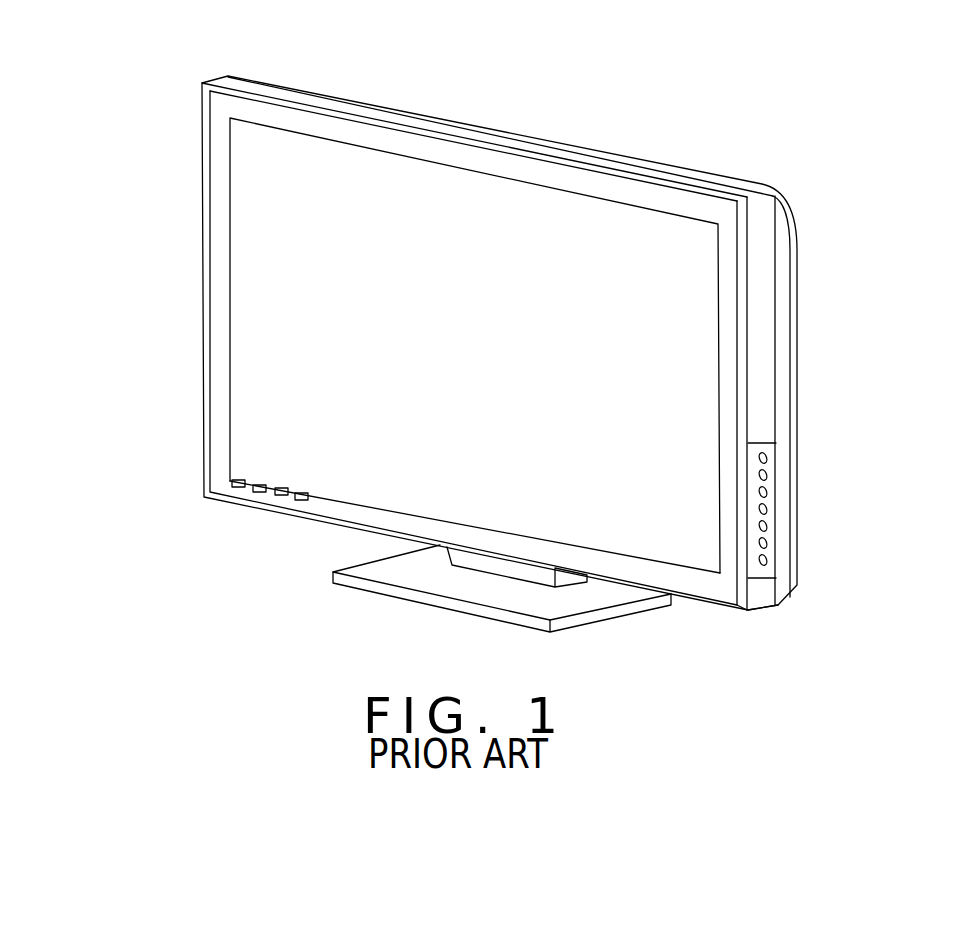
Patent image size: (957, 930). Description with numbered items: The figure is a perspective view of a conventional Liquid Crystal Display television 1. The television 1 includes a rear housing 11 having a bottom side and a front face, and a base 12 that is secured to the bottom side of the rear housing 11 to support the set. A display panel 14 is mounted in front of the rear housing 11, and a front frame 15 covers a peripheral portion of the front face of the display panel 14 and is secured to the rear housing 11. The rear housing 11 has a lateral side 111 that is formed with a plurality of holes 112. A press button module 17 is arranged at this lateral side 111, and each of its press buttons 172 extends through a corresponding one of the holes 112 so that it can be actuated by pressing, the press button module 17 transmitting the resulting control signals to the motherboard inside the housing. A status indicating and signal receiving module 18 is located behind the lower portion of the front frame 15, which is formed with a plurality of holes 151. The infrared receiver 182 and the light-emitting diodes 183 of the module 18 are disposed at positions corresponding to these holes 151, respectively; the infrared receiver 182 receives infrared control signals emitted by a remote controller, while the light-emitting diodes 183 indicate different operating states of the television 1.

The Liquid Crystal Display television 1 is at (124, 146).
The rear housing 11 is at (677, 182).
The lateral side 111 is at (765, 325).
The holes 112 is at (773, 603).
The base 12 is at (431, 583).
The display panel 14 is at (515, 210).
The front frame 15 is at (694, 580).
The holes 151 is at (240, 482).
The press button module 17 is at (801, 530).
The press buttons 172 is at (770, 546).
The status indicating and signal receiving module 18 is at (251, 518).
The infrared receiver 182 is at (240, 487).
The light-emitting diodes 183 is at (298, 500).